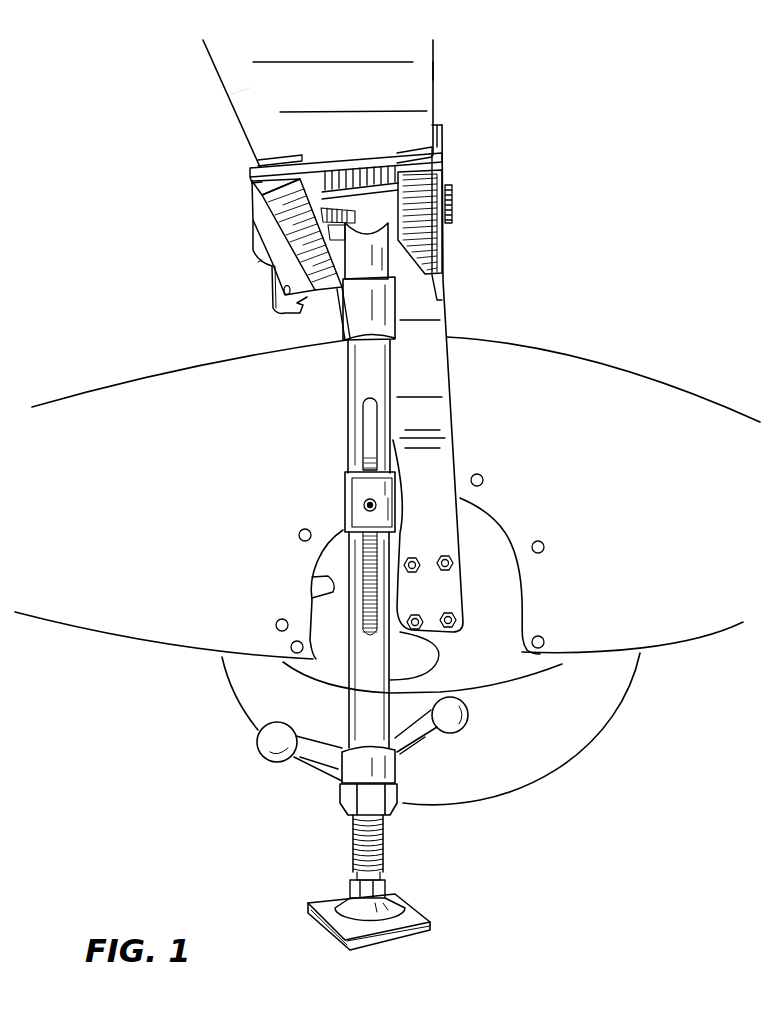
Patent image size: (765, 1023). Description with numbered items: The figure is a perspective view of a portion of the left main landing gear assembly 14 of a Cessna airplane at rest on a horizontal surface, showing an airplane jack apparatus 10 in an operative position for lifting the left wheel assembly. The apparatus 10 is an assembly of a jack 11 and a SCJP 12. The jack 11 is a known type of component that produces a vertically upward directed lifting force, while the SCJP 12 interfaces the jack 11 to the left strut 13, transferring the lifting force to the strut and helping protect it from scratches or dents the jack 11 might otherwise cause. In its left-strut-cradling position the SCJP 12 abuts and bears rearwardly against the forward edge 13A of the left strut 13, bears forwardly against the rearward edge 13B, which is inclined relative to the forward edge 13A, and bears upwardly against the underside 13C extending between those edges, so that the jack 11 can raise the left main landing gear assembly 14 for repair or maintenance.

The airplane jack apparatus 10 is at (152, 195).
The jack 11 is at (400, 349).
The SCJP 12 is at (462, 160).
The left strut 13 is at (445, 41).
The forward edge 13A is at (432, 72).
The rearward edge 13B is at (203, 40).
The underside 13C is at (240, 77).
The left main landing gear assembly 14 is at (510, 663).